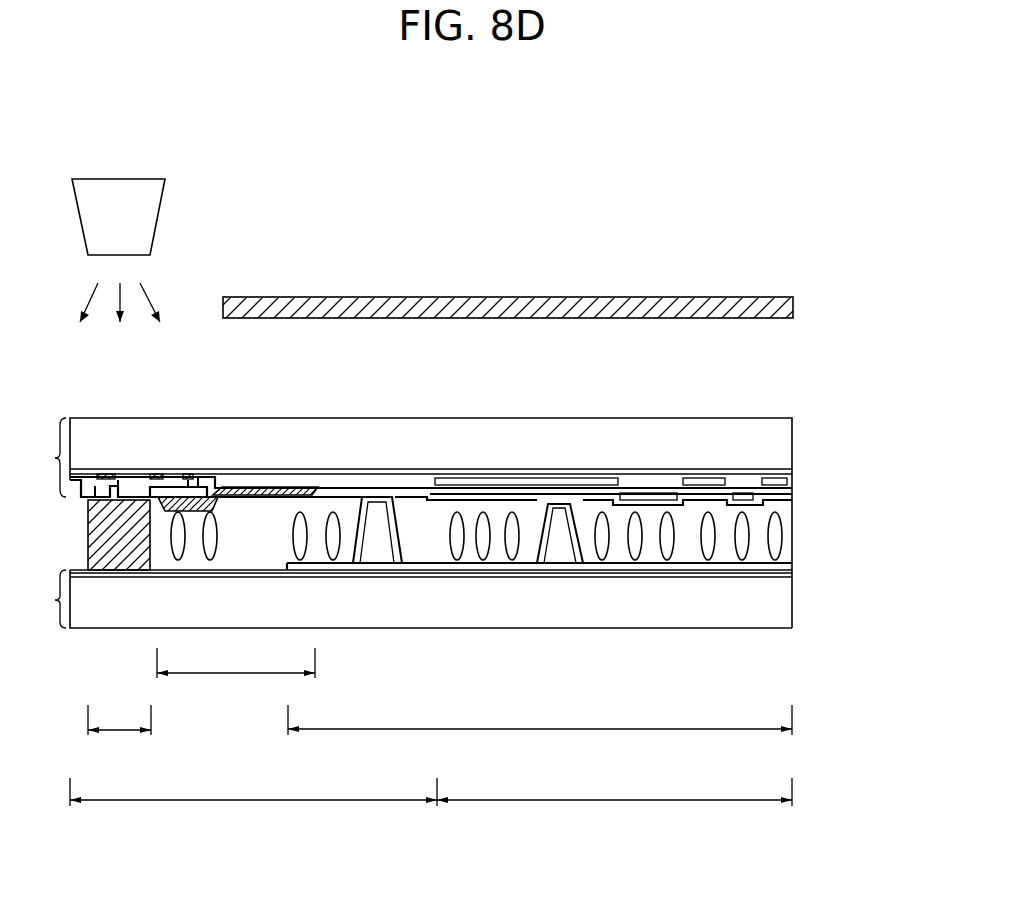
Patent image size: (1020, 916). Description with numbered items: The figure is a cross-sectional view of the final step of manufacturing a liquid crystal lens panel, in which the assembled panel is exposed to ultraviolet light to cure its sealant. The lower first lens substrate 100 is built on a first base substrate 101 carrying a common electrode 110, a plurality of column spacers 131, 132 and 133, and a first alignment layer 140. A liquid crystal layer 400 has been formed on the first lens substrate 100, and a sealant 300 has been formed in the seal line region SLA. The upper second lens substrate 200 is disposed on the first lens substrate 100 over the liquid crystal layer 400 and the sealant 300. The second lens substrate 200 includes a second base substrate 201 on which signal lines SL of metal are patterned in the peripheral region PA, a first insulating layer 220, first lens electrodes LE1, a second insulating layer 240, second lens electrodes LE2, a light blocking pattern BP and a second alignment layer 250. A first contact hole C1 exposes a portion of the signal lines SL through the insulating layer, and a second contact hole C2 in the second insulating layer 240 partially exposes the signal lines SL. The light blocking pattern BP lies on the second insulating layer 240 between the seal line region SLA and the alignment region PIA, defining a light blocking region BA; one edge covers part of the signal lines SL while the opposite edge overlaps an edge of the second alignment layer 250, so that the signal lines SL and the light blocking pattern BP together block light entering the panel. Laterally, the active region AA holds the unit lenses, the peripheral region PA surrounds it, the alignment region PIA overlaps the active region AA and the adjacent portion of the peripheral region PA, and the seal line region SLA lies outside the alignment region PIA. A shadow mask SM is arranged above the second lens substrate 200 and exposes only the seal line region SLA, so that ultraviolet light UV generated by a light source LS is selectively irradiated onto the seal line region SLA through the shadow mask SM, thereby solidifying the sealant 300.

The light source LS is at (158, 213).
The ultraviolet light UV is at (132, 301).
The shadow mask SM is at (795, 307).
The second base substrate 201 is at (795, 428).
The first insulating layer 220 is at (795, 471).
The second insulating layer 240 is at (795, 478).
The second alignment layer 250 is at (795, 497).
The first lens electrodes LE1 is at (545, 479).
The second lens electrodes LE2 is at (665, 495).
The second contact hole C2 is at (95, 485).
The signal lines SL is at (188, 478).
The first contact hole C1 is at (198, 476).
The column spacer 133 is at (240, 503).
The light blocking pattern BP is at (280, 500).
The liquid crystal layer 400 is at (795, 524).
The first alignment layer 140 is at (795, 565).
The common electrode 110 is at (795, 571).
The first base substrate 101 is at (795, 598).
The sealant 300 is at (110, 555).
The column spacer 132 is at (380, 550).
The column spacer 131 is at (558, 550).
The second lens substrate 200 is at (39, 457).
The first lens substrate 100 is at (39, 599).
The light blocking region BA is at (236, 674).
The seal line region SLA is at (119, 734).
The alignment region PIA is at (540, 734).
The peripheral region PA is at (253, 806).
The active region AA is at (614, 806).